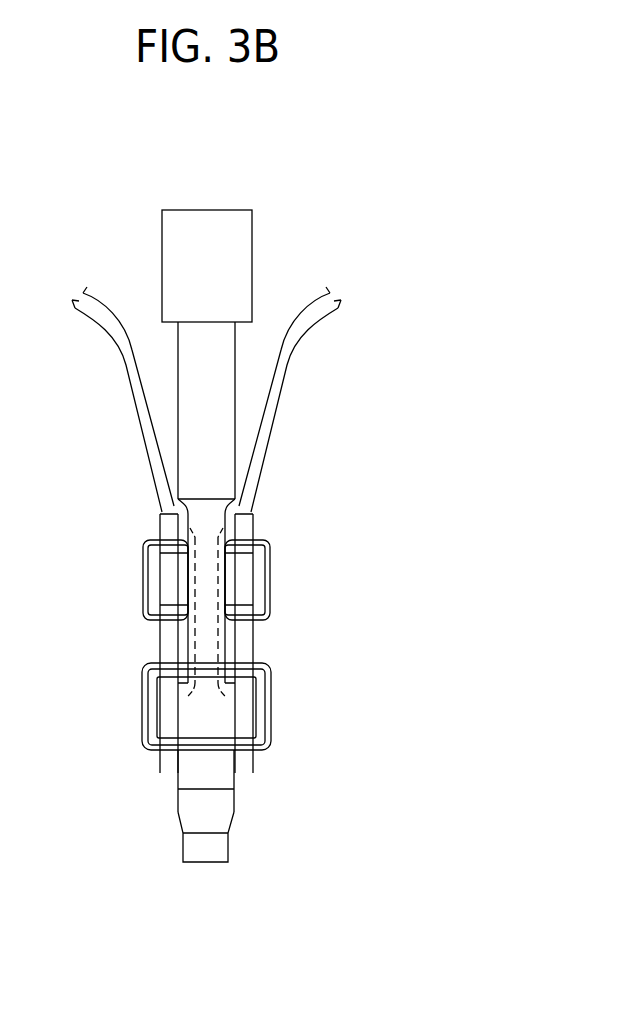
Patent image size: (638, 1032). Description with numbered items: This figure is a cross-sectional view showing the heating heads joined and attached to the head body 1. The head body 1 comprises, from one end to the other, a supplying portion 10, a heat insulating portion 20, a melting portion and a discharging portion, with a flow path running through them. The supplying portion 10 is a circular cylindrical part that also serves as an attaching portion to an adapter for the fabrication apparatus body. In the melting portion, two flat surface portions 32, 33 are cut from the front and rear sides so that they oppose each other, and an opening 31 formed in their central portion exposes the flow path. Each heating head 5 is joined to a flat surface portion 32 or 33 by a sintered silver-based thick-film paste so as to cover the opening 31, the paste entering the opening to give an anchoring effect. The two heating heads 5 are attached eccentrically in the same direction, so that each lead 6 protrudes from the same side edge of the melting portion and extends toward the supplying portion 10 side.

The head body 1 is at (120, 250).
The supplying portion 10 is at (225, 233).
The heat insulating portion 20 is at (222, 350).
The lead 6 is at (138, 385).
The heating head 5 is at (158, 642).
The opening 31 is at (222, 572).
The flat surface portion 32 is at (175, 780).
The flat surface portion 33 is at (237, 780).